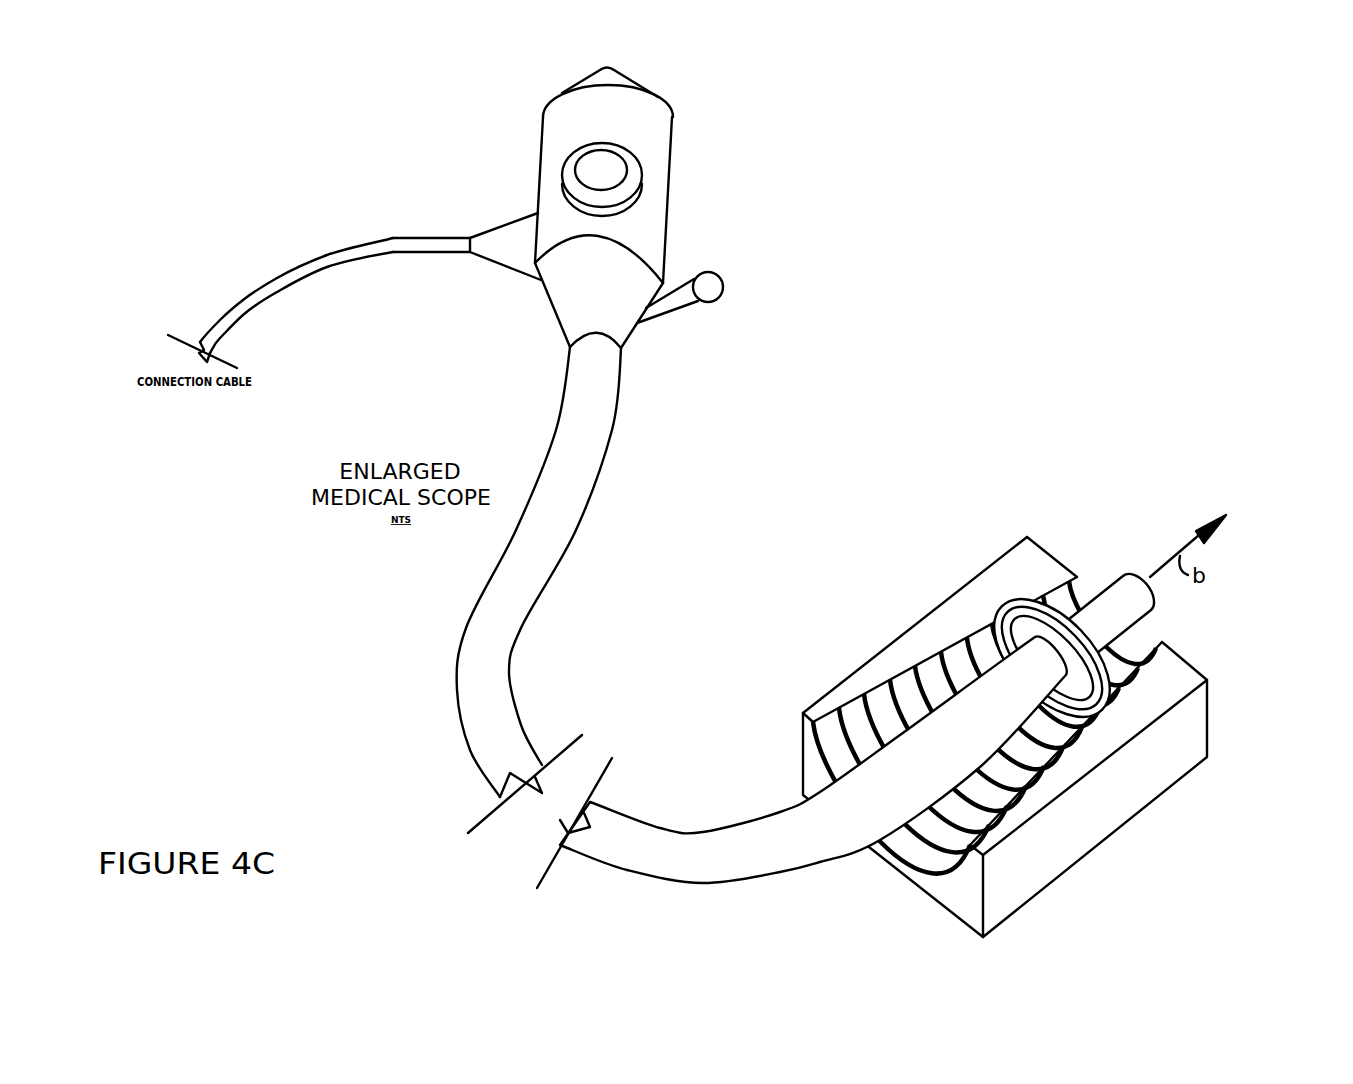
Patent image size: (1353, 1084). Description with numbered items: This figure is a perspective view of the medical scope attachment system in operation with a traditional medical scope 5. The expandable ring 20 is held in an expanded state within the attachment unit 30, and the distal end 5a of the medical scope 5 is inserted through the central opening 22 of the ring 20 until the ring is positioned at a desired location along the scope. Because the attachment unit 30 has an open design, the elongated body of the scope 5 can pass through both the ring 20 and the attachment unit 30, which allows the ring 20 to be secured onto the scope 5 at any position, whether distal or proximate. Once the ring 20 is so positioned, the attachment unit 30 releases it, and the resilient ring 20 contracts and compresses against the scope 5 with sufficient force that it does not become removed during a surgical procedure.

The medical scope 5 is at (653, 222).
The distal end 5a is at (1100, 572).
The expandable ring 20 is at (1105, 700).
The central opening 22 is at (1003, 613).
The attachment device 30 is at (1208, 700).